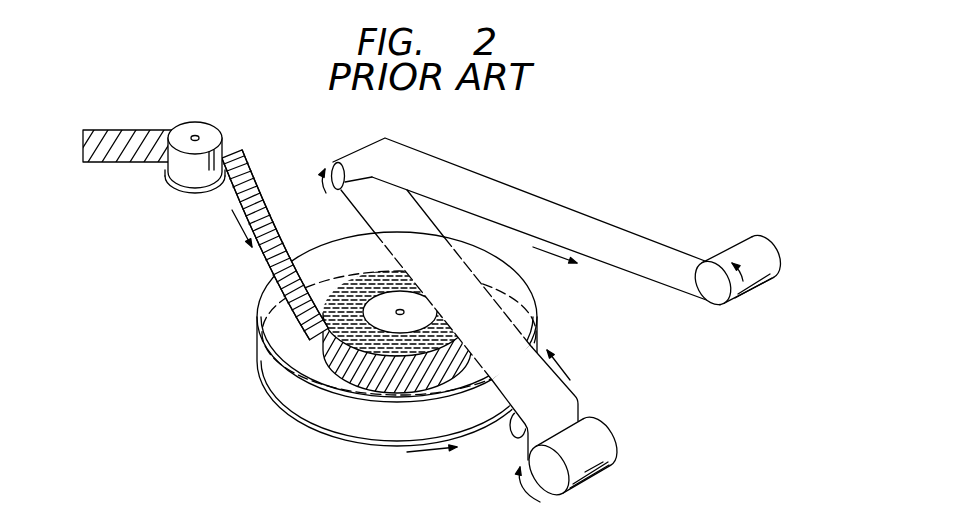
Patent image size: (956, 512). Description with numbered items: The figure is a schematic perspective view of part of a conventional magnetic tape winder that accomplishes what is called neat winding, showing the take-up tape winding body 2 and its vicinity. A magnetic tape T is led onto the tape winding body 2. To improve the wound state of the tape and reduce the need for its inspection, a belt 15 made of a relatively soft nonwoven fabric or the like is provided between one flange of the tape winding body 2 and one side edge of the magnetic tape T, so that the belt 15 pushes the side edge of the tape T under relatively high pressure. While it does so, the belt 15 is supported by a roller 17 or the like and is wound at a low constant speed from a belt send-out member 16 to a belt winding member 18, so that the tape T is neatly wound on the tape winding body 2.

The tape winding body 2 is at (303, 375).
The magnetic tape T is at (243, 178).
The belt 15 is at (602, 230).
The belt send-out member 16 is at (613, 448).
The roller 17 is at (334, 170).
The belt winding member 18 is at (717, 307).